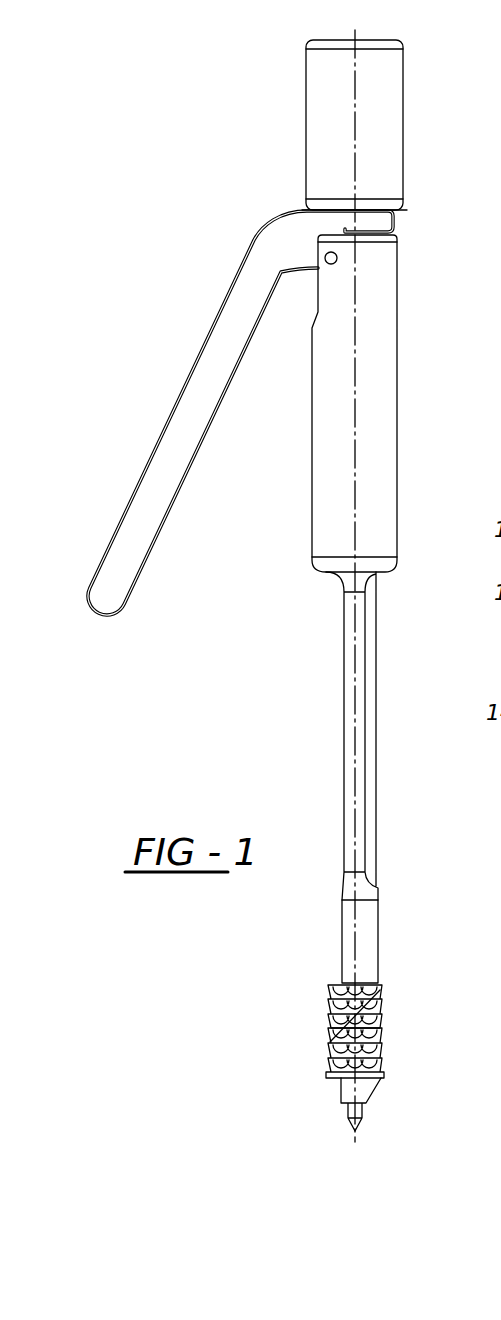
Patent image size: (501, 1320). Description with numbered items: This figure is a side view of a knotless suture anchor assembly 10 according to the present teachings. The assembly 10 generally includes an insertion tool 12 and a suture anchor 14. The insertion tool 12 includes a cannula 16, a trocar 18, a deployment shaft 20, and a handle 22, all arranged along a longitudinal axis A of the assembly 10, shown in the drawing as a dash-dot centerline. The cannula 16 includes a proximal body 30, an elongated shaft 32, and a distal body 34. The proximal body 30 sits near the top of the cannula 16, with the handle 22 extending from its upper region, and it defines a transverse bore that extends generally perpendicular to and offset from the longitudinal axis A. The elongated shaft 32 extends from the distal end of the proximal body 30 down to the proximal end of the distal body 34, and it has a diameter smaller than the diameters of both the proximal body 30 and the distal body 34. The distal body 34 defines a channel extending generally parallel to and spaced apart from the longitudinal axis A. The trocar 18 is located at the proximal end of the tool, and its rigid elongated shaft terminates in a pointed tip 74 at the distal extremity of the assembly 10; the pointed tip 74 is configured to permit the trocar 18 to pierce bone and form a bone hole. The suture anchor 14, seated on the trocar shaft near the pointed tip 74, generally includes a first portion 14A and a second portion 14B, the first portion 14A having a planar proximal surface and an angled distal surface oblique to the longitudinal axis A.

The knotless suture anchor assembly 10 is at (116, 158).
The insertion tool 12 is at (240, 413).
The suture anchor 14 is at (362, 1036).
The first portion 14A is at (370, 990).
The second portion 14B is at (375, 1040).
The cannula 16 is at (358, 403).
The trocar 18 is at (324, 121).
The deployment shaft 20 is at (368, 736).
The handle 22 is at (135, 527).
The proximal body 30 is at (327, 475).
The elongated shaft 32 is at (350, 733).
The distal body 34 is at (348, 943).
The pointed tip 74 is at (350, 1125).
The longitudinal axis A is at (355, 31).